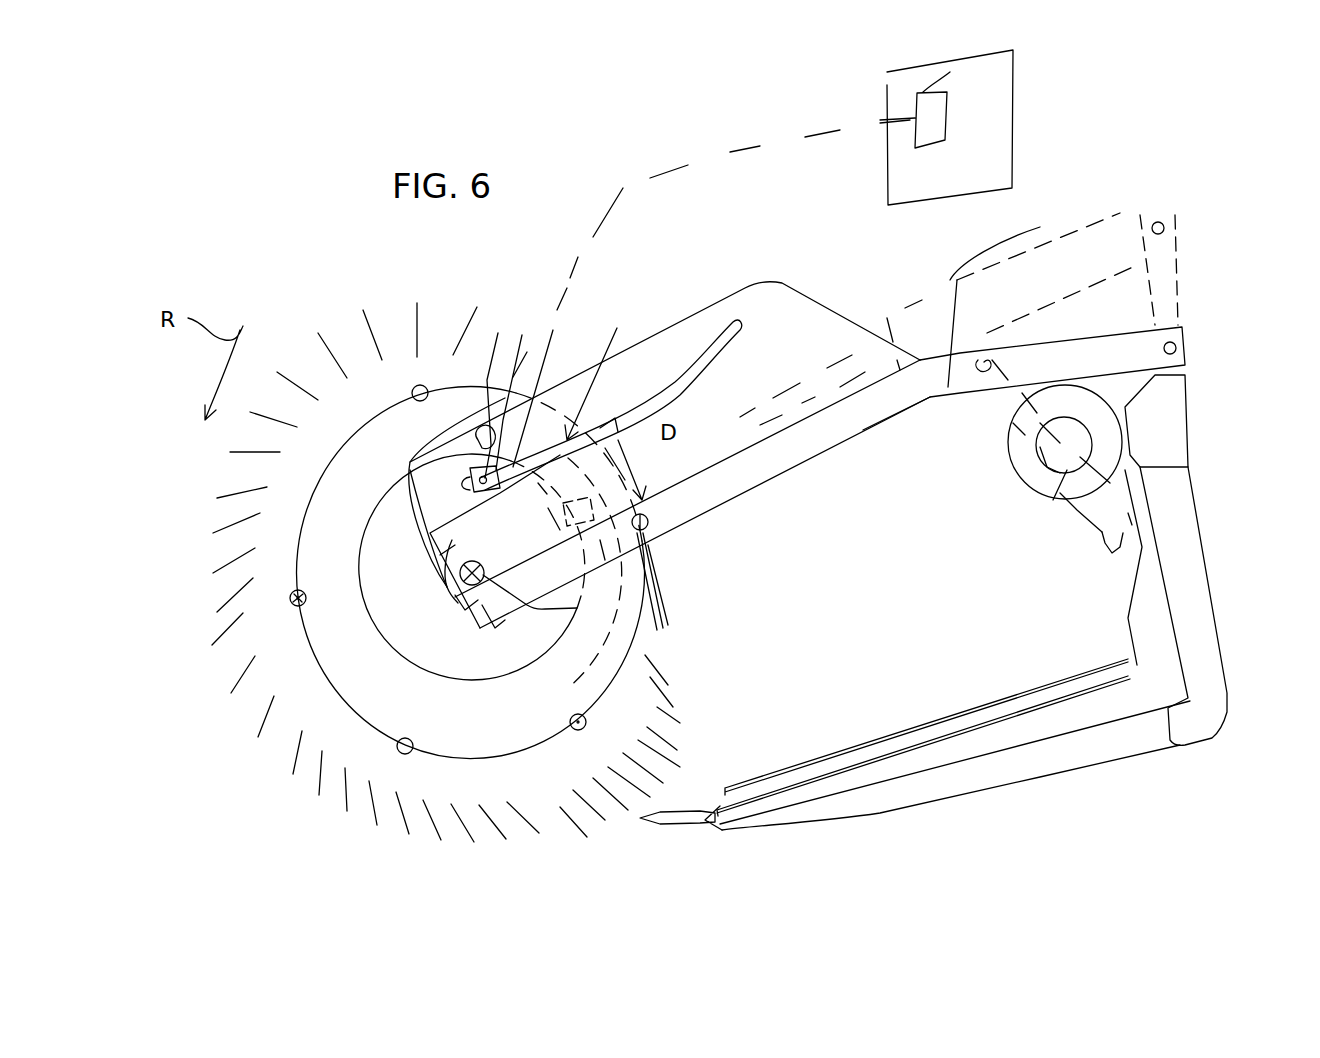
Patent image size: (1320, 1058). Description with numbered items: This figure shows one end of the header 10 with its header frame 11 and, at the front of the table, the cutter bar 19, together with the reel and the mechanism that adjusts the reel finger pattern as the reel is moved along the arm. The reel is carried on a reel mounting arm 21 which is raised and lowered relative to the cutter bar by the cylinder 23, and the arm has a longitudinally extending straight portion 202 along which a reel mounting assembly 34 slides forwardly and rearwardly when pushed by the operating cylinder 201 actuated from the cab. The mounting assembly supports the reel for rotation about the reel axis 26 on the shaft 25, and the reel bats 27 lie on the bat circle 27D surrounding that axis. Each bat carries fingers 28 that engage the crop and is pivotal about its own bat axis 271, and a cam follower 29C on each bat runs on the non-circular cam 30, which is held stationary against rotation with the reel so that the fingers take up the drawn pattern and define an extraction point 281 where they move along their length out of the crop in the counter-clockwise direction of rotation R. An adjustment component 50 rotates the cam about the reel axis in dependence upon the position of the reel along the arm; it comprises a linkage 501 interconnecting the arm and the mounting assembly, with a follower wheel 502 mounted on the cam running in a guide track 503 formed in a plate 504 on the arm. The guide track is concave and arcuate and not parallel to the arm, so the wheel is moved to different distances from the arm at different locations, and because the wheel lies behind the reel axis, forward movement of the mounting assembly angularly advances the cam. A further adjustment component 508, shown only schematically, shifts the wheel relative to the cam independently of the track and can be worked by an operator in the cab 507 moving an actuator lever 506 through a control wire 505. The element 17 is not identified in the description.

The header 10 is at (986, 566).
The header frame 11 is at (1214, 444).
The fork blade 17 is at (835, 716).
The cutter bar 19 is at (670, 830).
The reel mounting arm 21 is at (1025, 248).
The cylinder 23 is at (1102, 532).
The shaft 25 is at (505, 552).
The reel axis 26 is at (548, 555).
The reel bat 27 is at (417, 410).
The bat circle 27D is at (465, 762).
The fingers 28 is at (222, 600).
The cam follower 29C is at (453, 452).
The cam 30 is at (578, 730).
The reel mounting assembly 34 is at (466, 590).
The adjustment component 50 is at (607, 373).
The operating cylinder 201 is at (948, 285).
The straight portion 202 is at (707, 497).
The bat axis 271 is at (300, 604).
The extraction point 281 is at (690, 735).
The linkage 501 is at (558, 388).
The follower wheel 502 is at (507, 387).
The guide track 503 is at (683, 350).
The plate 504 is at (720, 290).
The control wire 505 is at (700, 155).
The actuator lever 506 is at (915, 113).
The cab 507 is at (1018, 100).
The further adjustment component 508 is at (470, 541).